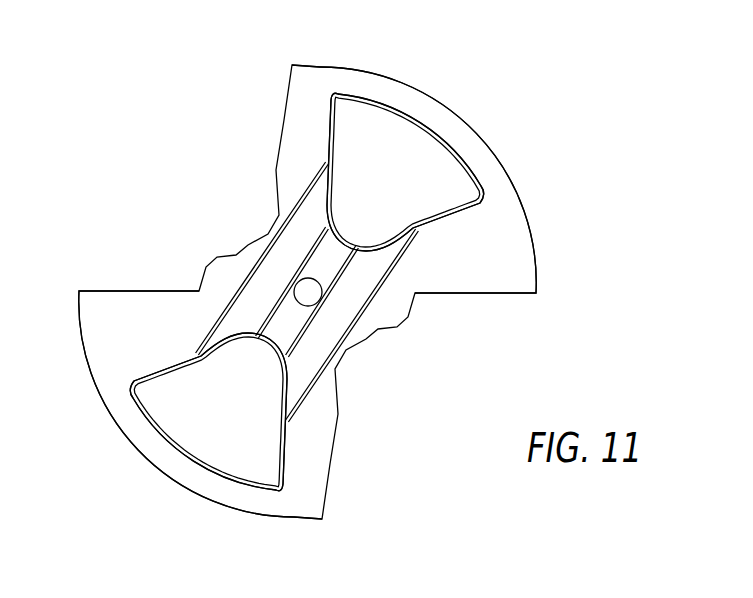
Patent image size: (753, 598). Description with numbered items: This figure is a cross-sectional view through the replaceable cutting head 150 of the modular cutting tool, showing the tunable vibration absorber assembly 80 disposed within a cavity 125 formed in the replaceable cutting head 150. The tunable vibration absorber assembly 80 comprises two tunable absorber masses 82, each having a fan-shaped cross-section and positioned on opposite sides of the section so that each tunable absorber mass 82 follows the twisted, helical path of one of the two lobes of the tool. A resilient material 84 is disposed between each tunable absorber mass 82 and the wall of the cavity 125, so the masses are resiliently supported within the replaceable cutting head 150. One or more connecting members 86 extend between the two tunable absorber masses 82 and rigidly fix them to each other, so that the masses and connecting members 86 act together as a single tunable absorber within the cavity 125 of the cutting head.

The replaceable cutting head 150 is at (197, 72).
The tunable absorber mass 82 is at (380, 104).
The cavity 125 is at (417, 128).
The resilient material 84 is at (457, 214).
The tunable vibration absorber assembly 80 is at (248, 230).
The connecting member 86 is at (248, 298).